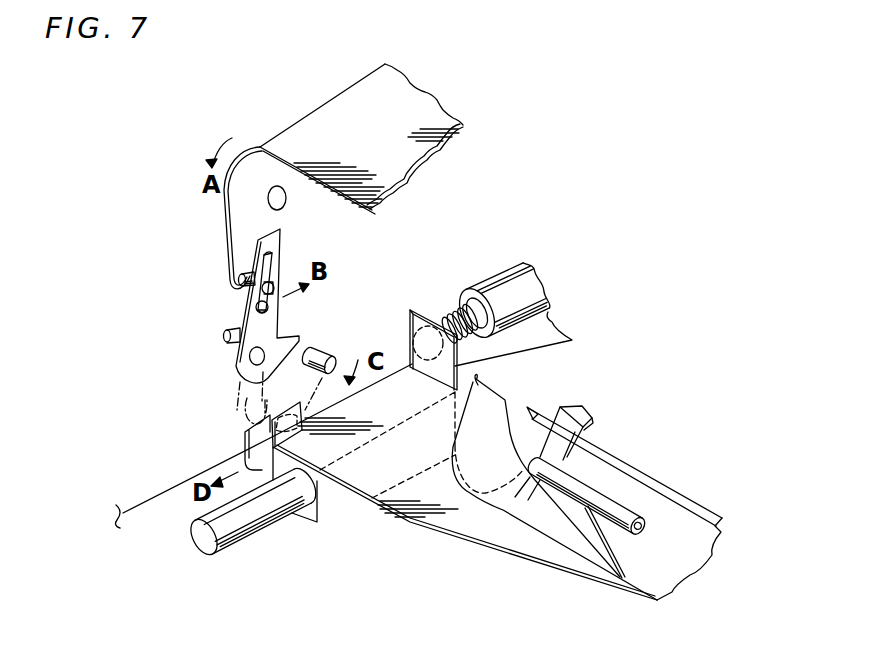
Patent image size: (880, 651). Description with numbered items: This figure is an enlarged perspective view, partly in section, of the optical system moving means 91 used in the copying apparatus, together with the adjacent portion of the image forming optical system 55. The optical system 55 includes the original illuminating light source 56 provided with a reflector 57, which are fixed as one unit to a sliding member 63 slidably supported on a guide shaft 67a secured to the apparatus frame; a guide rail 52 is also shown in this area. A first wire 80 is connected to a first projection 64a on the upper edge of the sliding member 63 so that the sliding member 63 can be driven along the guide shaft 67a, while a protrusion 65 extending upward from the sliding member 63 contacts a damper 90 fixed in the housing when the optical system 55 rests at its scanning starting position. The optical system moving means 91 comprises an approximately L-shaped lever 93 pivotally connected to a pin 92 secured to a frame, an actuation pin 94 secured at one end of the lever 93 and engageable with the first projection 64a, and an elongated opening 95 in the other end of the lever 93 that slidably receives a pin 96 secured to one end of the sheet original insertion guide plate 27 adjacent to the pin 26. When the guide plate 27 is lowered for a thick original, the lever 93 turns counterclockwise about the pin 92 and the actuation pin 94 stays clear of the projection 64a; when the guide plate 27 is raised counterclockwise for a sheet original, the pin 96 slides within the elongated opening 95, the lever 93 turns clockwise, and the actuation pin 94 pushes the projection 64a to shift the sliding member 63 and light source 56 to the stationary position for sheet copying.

The pin 26 is at (277, 186).
The sheet original insertion guide plate 27 is at (353, 105).
The guide rail 52 is at (700, 503).
The optical system 55 is at (629, 440).
The original illuminating light source 56 is at (617, 512).
The reflector 57 is at (537, 520).
The sliding member 63 is at (335, 502).
The first projection 64a is at (285, 410).
The protrusion 65 is at (427, 318).
The guide shaft 67a is at (257, 513).
The first wire 80 is at (148, 498).
The damper 90 is at (540, 272).
The optical system moving means 91 is at (231, 315).
The pin 92 is at (250, 356).
The L-shaped lever 93 is at (263, 327).
The actuation pin 94 is at (332, 348).
The elongated opening 95 is at (268, 305).
The pin 96 is at (276, 285).